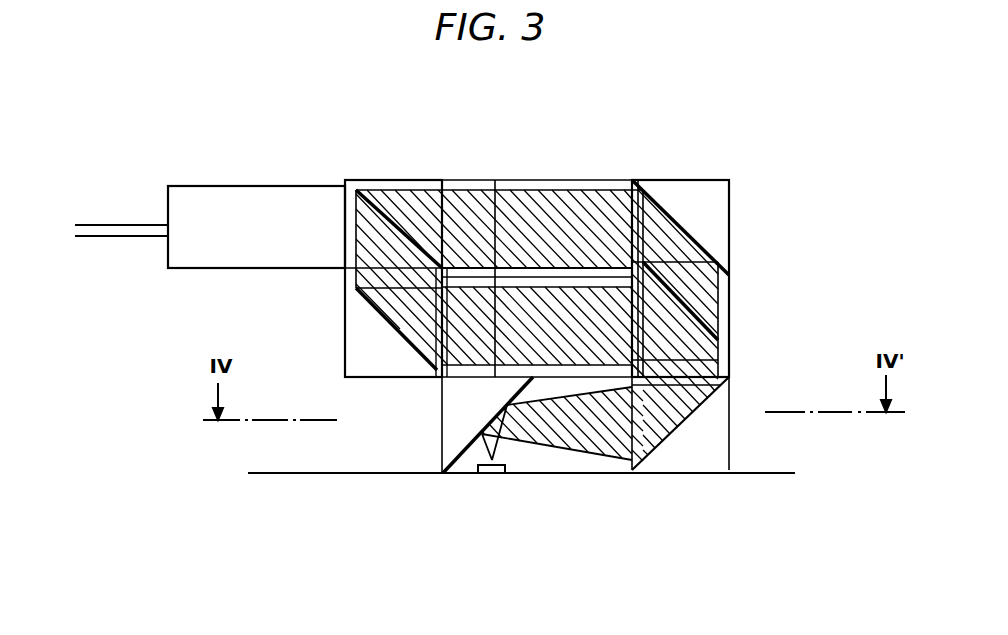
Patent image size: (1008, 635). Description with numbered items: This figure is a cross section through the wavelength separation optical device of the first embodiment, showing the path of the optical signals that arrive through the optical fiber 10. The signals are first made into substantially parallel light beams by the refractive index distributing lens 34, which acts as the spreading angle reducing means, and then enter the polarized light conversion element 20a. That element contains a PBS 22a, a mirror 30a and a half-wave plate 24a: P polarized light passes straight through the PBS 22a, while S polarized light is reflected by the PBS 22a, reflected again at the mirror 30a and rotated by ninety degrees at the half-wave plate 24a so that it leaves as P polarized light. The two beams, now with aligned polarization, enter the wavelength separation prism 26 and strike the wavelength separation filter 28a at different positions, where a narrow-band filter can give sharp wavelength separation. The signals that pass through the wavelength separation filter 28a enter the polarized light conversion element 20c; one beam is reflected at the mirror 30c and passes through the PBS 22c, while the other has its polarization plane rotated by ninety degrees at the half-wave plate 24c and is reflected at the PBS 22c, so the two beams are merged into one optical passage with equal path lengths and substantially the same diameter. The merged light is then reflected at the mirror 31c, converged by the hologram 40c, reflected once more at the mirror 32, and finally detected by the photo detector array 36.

The optical fiber 10 is at (122, 226).
The refractive index distributing lens 34 is at (257, 198).
The polarized light conversion element 20a is at (374, 178).
The PBS 22a is at (408, 237).
The mirror 30a is at (372, 310).
The λ/2 plate 24a is at (432, 375).
The wavelength separation prism 26 is at (575, 178).
The wavelength separation filter 28a is at (497, 178).
The polarized light conversion element 20c is at (683, 178).
The mirror 30c is at (707, 247).
The PBS 22c is at (702, 340).
The λ/2 plate 24c is at (729, 381).
The mirror 31c is at (700, 412).
The mirror 32 is at (443, 478).
The photo detector array 36 is at (498, 476).
The hologram 40c is at (630, 474).